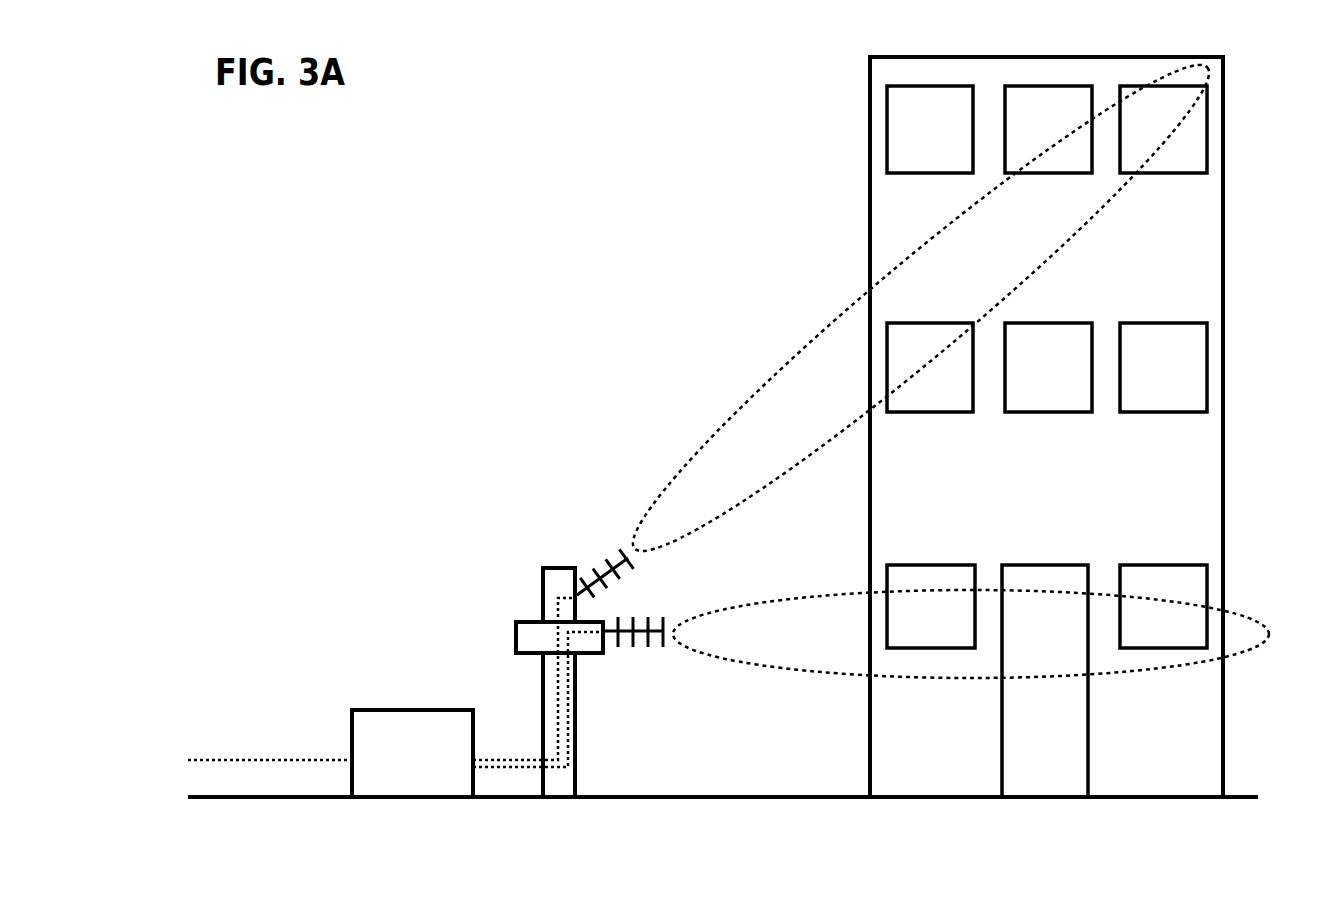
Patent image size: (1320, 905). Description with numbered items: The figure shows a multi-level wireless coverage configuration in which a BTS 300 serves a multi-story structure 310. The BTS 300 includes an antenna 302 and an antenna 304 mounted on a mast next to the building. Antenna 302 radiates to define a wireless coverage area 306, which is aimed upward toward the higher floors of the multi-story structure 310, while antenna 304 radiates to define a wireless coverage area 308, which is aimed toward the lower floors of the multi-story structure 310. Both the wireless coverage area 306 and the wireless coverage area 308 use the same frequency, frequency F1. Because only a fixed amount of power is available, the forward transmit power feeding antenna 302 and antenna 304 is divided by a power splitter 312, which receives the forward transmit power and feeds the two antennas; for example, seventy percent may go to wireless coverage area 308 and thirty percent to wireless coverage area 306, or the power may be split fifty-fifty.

The BTS 300 is at (515, 573).
The antenna 302 is at (573, 537).
The antenna 304 is at (665, 675).
The wireless coverage area 306 is at (782, 337).
The wireless coverage area 308 is at (838, 693).
The multi-story structure 310 is at (837, 137).
The power splitter 312 is at (352, 682).